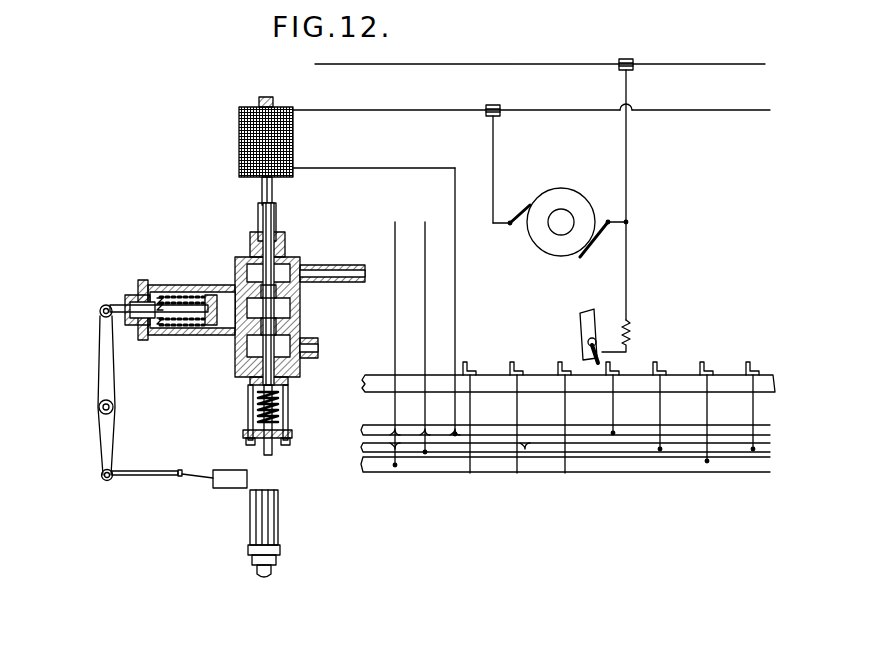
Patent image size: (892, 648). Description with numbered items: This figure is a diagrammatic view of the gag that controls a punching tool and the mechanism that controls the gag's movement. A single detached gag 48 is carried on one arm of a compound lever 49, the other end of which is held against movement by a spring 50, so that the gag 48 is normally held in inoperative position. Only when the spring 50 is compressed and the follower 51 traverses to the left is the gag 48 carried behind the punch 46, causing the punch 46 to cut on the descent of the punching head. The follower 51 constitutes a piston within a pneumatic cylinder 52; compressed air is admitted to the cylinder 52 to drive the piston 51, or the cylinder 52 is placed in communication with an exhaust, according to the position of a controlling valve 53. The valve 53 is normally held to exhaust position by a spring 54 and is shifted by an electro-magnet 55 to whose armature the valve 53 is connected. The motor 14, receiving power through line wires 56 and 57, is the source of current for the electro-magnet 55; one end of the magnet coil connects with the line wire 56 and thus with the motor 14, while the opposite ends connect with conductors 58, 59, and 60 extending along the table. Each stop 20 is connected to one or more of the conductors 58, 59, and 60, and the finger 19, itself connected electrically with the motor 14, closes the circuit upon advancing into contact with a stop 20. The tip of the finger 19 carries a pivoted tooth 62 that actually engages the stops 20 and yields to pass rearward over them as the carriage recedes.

The motor 14 is at (577, 200).
The finger 19 is at (580, 322).
The stops 20 is at (513, 366).
The punch 46 is at (280, 516).
The gag 48 is at (226, 489).
The compound lever 49 is at (97, 366).
The spring 50 is at (196, 322).
The follower 51 is at (211, 294).
The pneumatic cylinder 52 is at (185, 286).
The controlling valve 53 is at (288, 311).
The spring 54 is at (284, 412).
The electro-magnet 55 is at (238, 145).
The line wire 56 is at (561, 109).
The line wire 57 is at (582, 63).
The conductor 58 is at (363, 430).
The conductor 59 is at (363, 448).
The conductor 60 is at (363, 468).
The tooth 62 is at (583, 351).